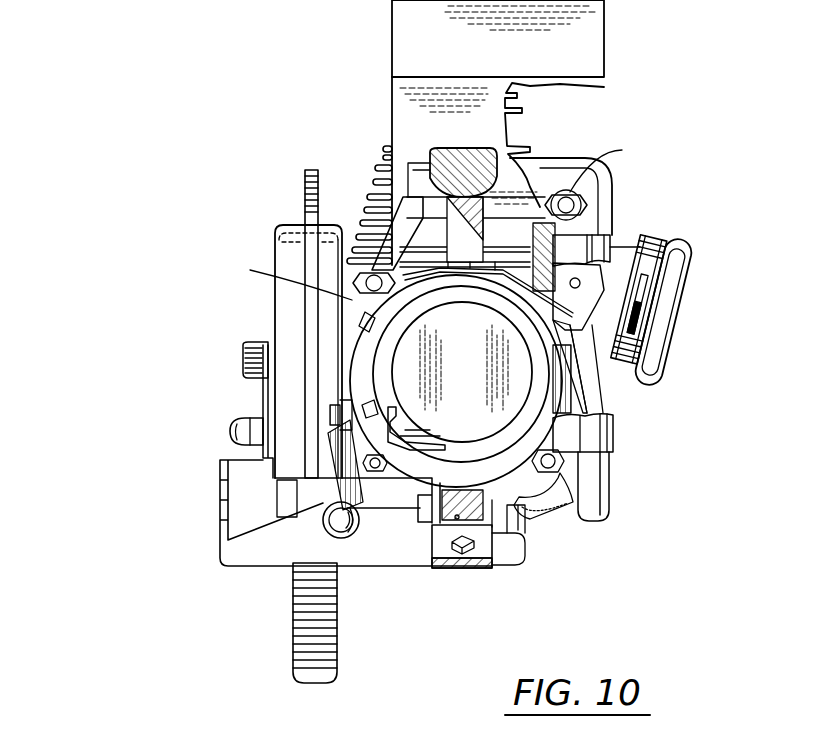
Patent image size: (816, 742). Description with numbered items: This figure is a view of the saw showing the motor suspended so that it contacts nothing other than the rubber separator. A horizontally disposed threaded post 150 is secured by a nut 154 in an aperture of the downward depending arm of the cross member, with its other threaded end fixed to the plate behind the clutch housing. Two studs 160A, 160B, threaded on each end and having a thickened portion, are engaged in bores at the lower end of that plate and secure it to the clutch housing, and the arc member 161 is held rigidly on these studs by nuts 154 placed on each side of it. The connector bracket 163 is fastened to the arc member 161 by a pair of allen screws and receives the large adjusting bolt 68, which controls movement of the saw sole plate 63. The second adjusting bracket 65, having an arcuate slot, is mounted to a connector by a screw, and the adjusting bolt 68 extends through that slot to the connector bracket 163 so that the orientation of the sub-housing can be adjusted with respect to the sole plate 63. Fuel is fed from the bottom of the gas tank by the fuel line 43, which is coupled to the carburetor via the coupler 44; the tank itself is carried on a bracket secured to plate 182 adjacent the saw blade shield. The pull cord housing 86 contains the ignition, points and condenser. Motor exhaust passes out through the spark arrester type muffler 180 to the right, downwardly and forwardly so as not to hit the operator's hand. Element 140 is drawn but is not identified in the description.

The fuel line 43 is at (598, 390).
The coupler 44 is at (618, 244).
The saw sole plate 63 is at (306, 552).
The second adjusting bracket 65 is at (312, 170).
The adjusting bolt 68 is at (233, 431).
The pull cord housing 86 is at (478, 372).
The ring 140 is at (372, 400).
The threaded post 150 is at (365, 278).
The nut 154 is at (343, 538).
The stud 160A is at (375, 475).
The stud 160B is at (556, 462).
The arc member 161 is at (533, 483).
The connector bracket 163 is at (333, 405).
The spark arrester type muffler 180 is at (603, 335).
The plate 182 is at (360, 345).